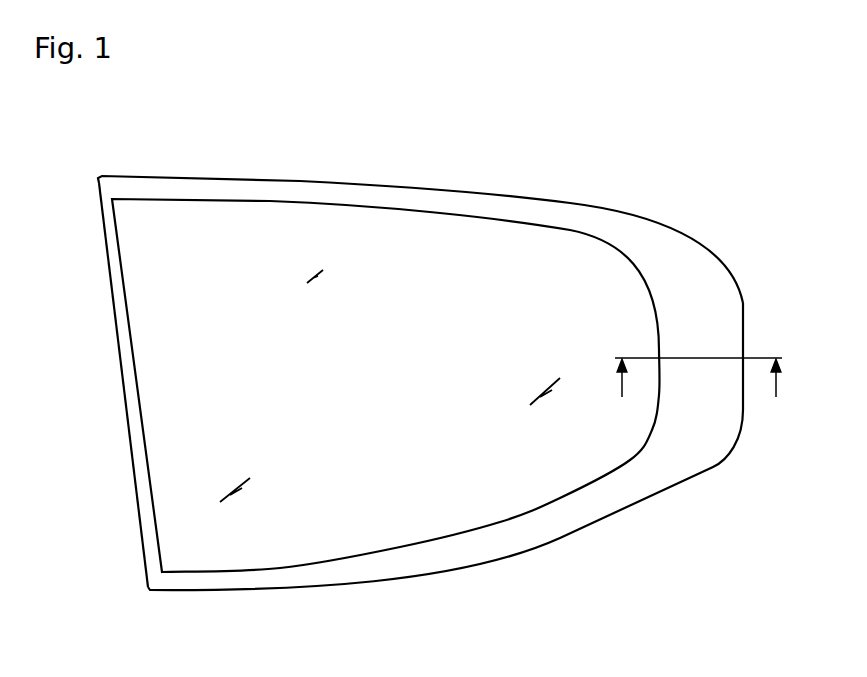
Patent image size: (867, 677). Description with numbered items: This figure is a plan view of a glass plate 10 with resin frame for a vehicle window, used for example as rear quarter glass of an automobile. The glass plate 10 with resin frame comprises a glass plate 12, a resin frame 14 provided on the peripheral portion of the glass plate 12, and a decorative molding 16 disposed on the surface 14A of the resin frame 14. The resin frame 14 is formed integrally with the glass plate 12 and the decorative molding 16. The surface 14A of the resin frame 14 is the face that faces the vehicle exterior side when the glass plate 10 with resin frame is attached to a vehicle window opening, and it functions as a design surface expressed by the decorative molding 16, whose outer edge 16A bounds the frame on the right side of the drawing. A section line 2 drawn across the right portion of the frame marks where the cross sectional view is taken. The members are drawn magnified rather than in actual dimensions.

The glass plate with resin frame 10 is at (487, 154).
The glass plate 12 is at (388, 378).
The resin frame 14 is at (115, 385).
The surface of the resin frame 14A is at (131, 448).
The decorative molding 16 is at (670, 221).
The outer surface of second frame portion 16A is at (716, 262).
The line 2- 2 is at (698, 392).